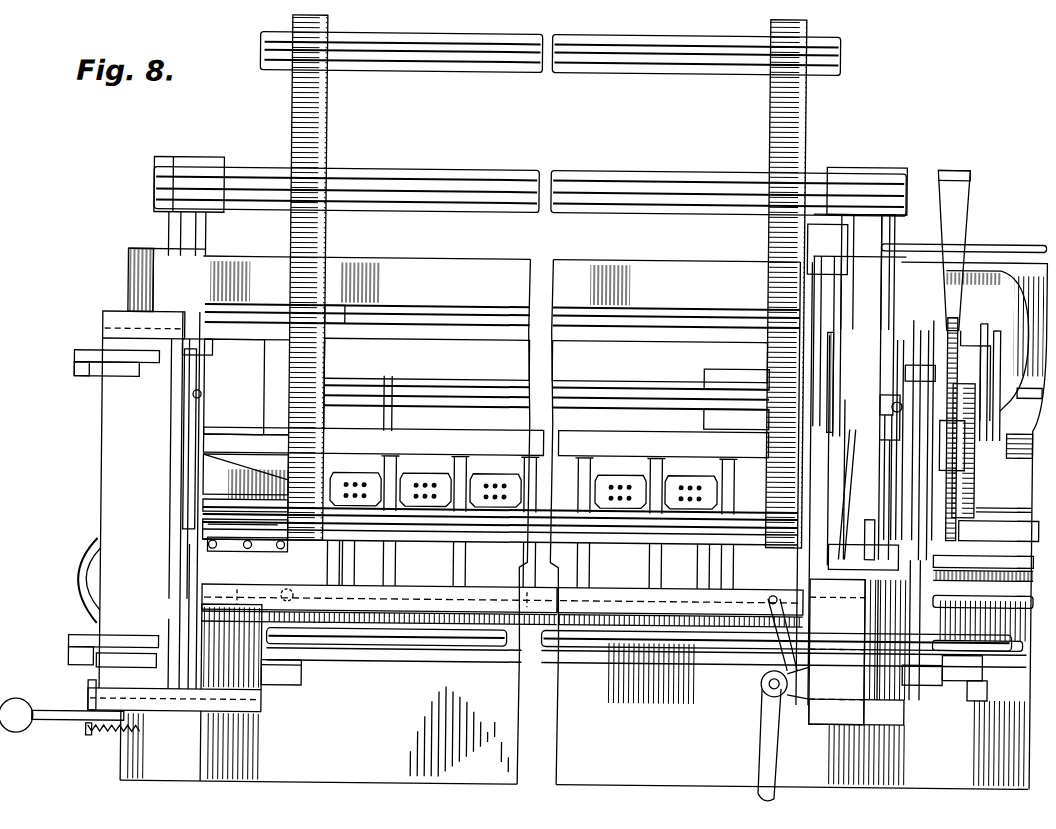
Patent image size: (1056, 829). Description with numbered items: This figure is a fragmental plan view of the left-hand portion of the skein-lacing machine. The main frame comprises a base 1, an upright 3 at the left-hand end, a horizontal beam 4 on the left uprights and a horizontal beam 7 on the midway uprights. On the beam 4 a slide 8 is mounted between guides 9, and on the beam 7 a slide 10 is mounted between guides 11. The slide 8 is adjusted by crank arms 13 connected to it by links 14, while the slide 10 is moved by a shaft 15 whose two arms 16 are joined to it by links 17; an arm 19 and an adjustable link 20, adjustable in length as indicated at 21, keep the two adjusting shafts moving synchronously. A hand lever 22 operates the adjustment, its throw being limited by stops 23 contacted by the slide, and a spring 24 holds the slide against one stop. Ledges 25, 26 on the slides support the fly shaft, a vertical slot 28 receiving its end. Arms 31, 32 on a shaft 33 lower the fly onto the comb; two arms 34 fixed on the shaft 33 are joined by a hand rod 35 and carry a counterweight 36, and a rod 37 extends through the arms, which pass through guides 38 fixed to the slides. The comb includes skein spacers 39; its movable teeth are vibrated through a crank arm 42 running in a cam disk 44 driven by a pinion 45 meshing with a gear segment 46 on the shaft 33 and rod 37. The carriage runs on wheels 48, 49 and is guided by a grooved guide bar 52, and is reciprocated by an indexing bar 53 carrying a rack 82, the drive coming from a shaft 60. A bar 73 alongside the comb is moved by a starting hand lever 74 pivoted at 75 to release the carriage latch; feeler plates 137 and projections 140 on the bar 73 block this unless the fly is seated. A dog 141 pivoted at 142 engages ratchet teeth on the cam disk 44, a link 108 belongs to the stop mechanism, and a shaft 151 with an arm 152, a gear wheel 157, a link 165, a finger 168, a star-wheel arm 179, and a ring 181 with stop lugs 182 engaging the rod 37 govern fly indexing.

The base 1 is at (545, 785).
The upright 3 is at (752, 531).
The horizontal beam 4 is at (165, 780).
The horizontal beam 7 is at (860, 790).
The slide 8 is at (108, 450).
The guides 9 is at (110, 323).
The slide 10 is at (800, 470).
The guides 11 is at (855, 725).
The crank arms 13 is at (90, 378).
The links 14 is at (85, 362).
The shaft 15 is at (910, 445).
The arms 16 is at (900, 412).
The links 17 is at (910, 365).
The arm 19 is at (975, 700).
The link 20 is at (588, 648).
The length adjustment 21 is at (230, 508).
The hand lever 22 is at (45, 728).
The stops 23 is at (95, 682).
The spring 24 is at (112, 735).
The ledge 25 is at (190, 628).
The ledge 26 is at (860, 617).
The vertical slot 28 is at (868, 527).
The arm 31 is at (190, 488).
The arm 32 is at (892, 508).
The shaft 33 is at (597, 188).
The arms 34 is at (325, 145).
The hand rod 35 is at (523, 520).
The counterweight 36 is at (488, 62).
The rod 37 is at (545, 360).
The guides 38 is at (210, 352).
The skein spacers 39 is at (400, 556).
The crank arm 42 is at (965, 480).
The cam disk 44 is at (990, 508).
The pinion 45 is at (940, 468).
The gear segment 46 is at (948, 292).
The wheels 48 is at (305, 672).
The wheels 49 is at (268, 368).
The grooved guide bar 52 is at (490, 440).
The indexing bar 53 is at (1016, 522).
The shaft 60 is at (1038, 420).
The bar 73 is at (910, 620).
The starting hand lever 74 is at (768, 758).
The pivot 75 is at (765, 690).
The rack 82 is at (1010, 556).
The link 108 is at (1036, 381).
The feeler plates 137 is at (330, 562).
The angular projections 140 is at (776, 590).
The dog 141 is at (1015, 340).
The pivot 142 is at (960, 330).
The shaft 151 is at (1022, 237).
The arm 152 is at (800, 306).
The gear wheel 157 is at (830, 437).
The link 165 is at (856, 470).
The finger 168 is at (860, 548).
The arm 179 is at (728, 425).
The ring 181 is at (878, 345).
The stop lugs 182 is at (735, 365).